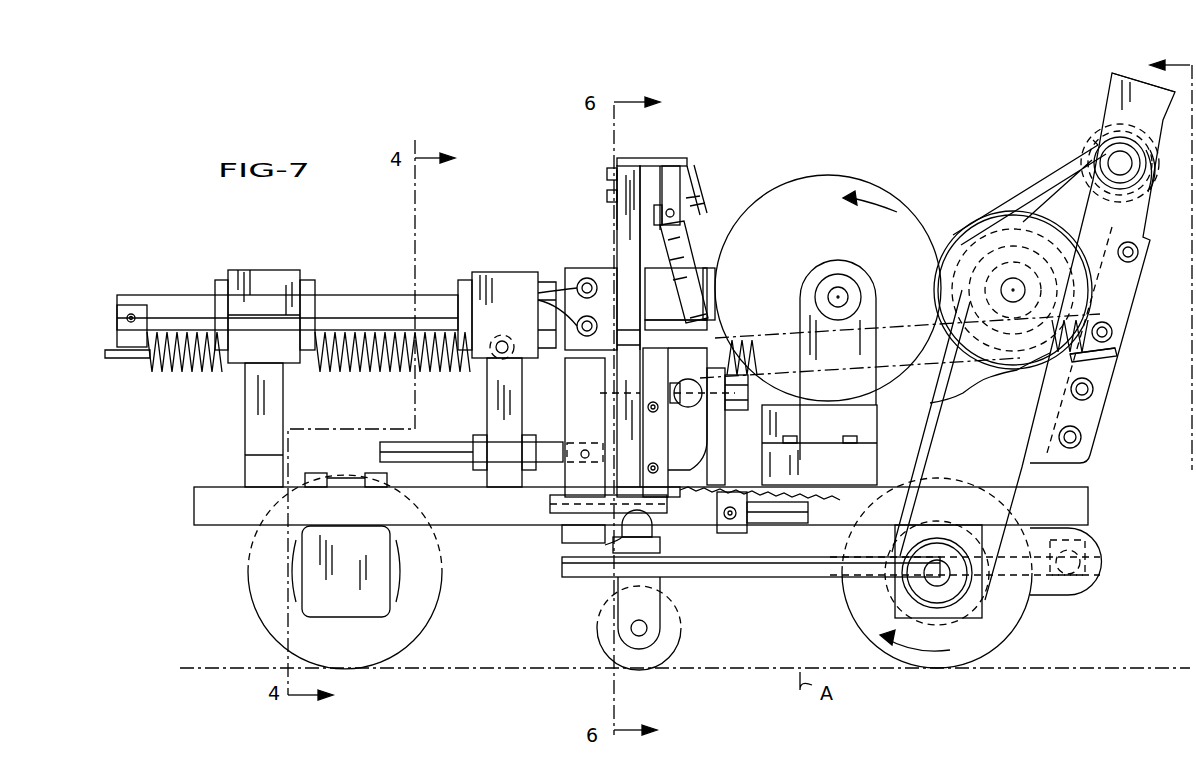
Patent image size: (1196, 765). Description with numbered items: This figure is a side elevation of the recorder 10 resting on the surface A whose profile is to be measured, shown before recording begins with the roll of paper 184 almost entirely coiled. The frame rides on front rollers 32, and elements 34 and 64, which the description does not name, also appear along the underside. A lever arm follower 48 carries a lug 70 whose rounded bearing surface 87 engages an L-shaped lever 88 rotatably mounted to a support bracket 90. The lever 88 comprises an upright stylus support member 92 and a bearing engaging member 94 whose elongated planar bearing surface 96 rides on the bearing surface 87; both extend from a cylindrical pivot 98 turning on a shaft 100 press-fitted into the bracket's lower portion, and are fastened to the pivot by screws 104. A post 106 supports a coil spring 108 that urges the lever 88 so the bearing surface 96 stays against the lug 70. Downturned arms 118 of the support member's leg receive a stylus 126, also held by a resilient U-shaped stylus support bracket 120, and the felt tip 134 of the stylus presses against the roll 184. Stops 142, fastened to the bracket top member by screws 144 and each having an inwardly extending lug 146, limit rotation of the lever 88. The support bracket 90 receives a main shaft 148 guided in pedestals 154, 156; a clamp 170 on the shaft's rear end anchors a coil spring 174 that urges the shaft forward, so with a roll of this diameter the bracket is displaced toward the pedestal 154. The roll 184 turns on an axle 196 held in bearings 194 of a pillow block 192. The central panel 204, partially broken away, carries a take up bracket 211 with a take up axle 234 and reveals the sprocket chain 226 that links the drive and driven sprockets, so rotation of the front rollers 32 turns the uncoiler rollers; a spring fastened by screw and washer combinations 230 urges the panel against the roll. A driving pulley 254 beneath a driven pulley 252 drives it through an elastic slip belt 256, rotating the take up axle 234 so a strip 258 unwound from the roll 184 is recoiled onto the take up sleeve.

The recorder 10 is at (905, 185).
The front rollers 32 is at (1025, 594).
The front wheel 34 is at (432, 567).
The lever arm follower 48 is at (718, 578).
The caster roller 64 is at (672, 580).
The lug 70 is at (652, 538).
The rounded bearing surface 87 is at (600, 545).
The L-shaped lever 88 is at (606, 222).
The support bracket 90 is at (522, 383).
The stylus support member 92 is at (640, 283).
The bearing engaging member 94 is at (665, 418).
The planar bearing surface 96 is at (595, 497).
The cylindrical pivot 98 is at (718, 537).
The shaft 100 is at (779, 524).
The screws 104 is at (645, 393).
The post 106 is at (725, 438).
The coil spring 108 is at (678, 380).
The downturned arms 118 is at (680, 182).
The stylus support bracket 120 is at (625, 158).
The stylus 126 is at (695, 232).
The tip 134 is at (708, 306).
The stops 142 is at (605, 268).
The screws 144 is at (535, 304).
The lug 146 is at (700, 330).
The main shaft 148 is at (342, 298).
The pedestal 154 is at (500, 272).
The pedestal 156 is at (252, 270).
The clamp 170 is at (120, 300).
The coil spring 174 is at (318, 372).
The roll of paper 184 is at (868, 236).
The pillow block 192 is at (902, 404).
The bearings 194 is at (856, 302).
The axle 196 is at (843, 290).
The central panel 204 is at (1102, 386).
The take up bracket 211 is at (1114, 93).
The sprocket chain 226 is at (1060, 390).
The screw and washer combinations 230 is at (748, 378).
The take up axle 234 is at (1122, 160).
The driven pulley 252 is at (1146, 185).
The driving pulley 254 is at (1125, 316).
The elastic slip belt 256 is at (1110, 295).
The strip 258 is at (1080, 133).